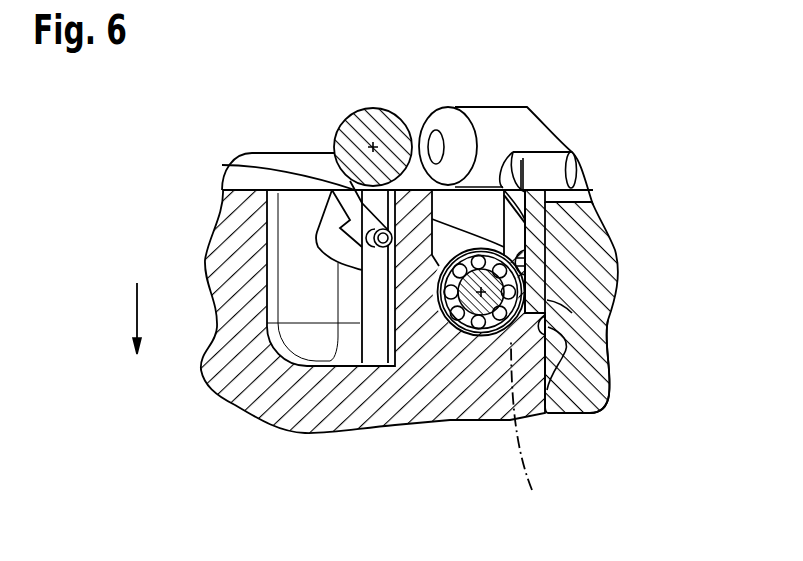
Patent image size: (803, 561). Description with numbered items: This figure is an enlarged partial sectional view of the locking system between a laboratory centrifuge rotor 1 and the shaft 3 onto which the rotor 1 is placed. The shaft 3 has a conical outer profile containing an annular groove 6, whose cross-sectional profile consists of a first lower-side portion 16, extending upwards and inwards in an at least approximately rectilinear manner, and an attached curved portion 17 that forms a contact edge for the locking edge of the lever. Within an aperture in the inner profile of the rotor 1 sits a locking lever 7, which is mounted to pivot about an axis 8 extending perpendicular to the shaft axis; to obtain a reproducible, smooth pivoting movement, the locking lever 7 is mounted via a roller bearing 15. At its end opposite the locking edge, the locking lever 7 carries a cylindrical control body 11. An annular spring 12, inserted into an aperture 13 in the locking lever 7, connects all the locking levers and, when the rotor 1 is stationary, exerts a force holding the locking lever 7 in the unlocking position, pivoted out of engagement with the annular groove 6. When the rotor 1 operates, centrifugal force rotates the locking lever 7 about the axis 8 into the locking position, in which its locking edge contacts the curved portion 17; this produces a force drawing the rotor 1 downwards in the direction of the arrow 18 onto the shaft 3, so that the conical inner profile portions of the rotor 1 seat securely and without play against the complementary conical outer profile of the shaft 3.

The rotor 1 is at (257, 393).
The shaft 3 is at (586, 230).
The annular groove 6 is at (550, 369).
The locking lever 7 is at (450, 243).
The axis 8 is at (527, 432).
The cylindrical control body 11 is at (368, 130).
The annular spring 12 is at (380, 250).
The aperture 13 is at (347, 226).
The roller bearing 15 is at (469, 335).
The first lower-side portion 16 is at (548, 312).
The curved portion 17 is at (572, 316).
The arrow 18 is at (135, 318).